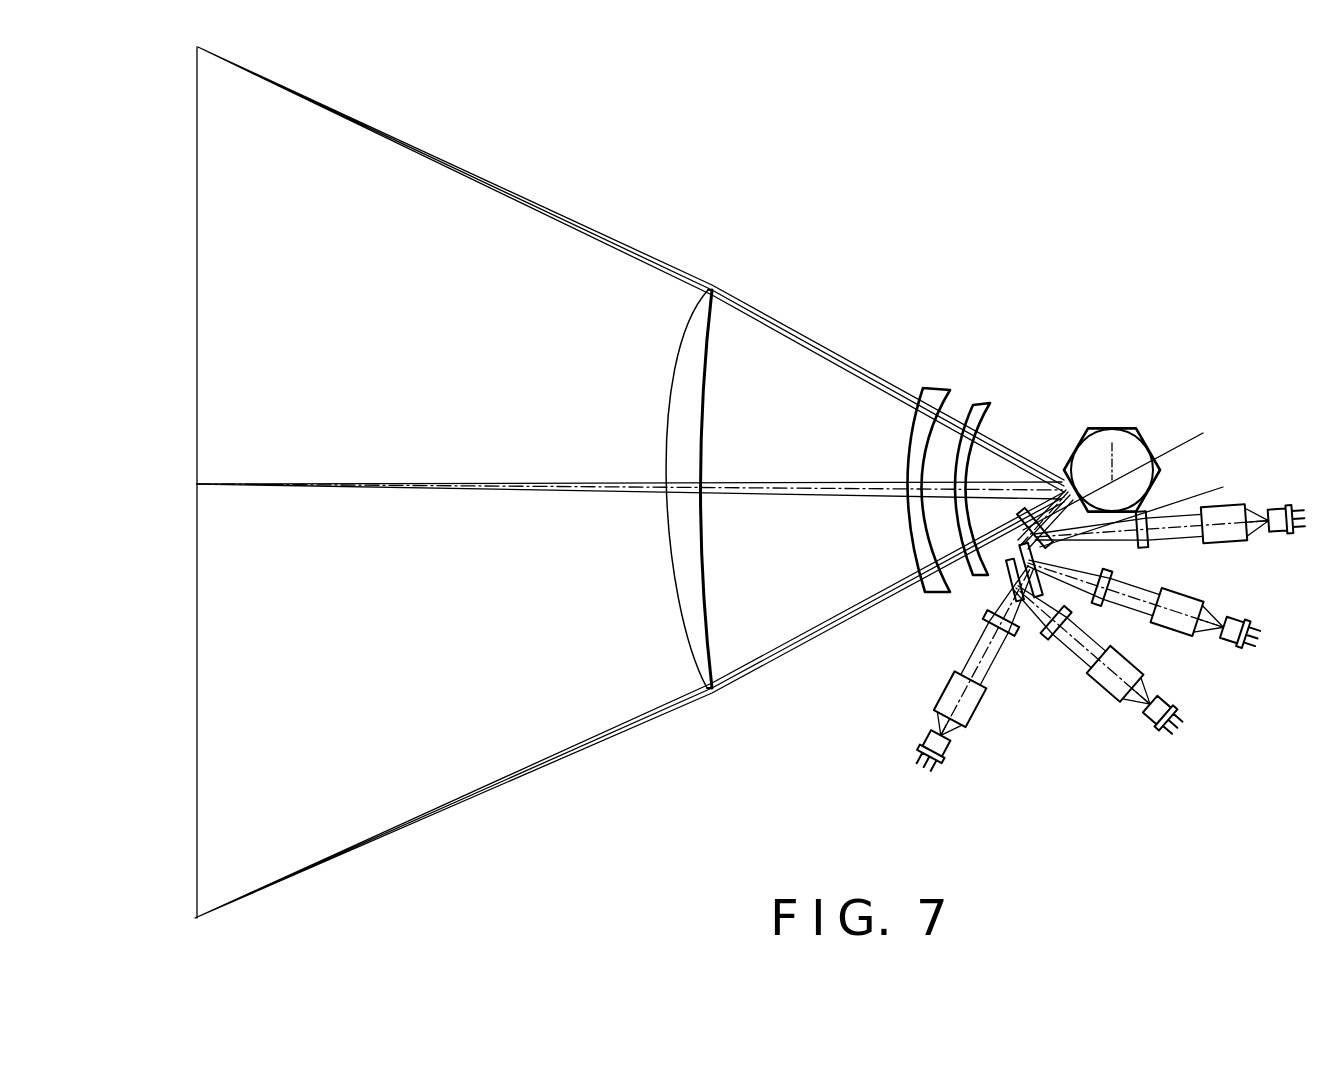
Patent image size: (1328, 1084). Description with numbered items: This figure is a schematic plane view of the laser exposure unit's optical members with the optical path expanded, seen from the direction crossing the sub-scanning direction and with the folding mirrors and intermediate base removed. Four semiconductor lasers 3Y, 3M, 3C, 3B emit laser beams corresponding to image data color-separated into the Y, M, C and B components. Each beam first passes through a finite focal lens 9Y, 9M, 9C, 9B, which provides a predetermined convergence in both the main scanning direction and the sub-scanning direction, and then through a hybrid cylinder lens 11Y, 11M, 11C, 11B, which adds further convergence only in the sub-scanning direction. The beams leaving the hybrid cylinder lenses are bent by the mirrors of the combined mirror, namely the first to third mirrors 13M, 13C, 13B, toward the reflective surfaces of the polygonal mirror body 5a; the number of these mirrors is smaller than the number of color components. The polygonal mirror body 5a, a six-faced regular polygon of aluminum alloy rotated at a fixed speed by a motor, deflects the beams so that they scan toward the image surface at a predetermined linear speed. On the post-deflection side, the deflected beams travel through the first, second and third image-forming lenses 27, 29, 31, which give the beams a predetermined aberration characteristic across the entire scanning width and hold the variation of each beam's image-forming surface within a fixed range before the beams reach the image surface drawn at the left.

The third image-forming lens 31 is at (690, 372).
The second image-forming lens 29 is at (943, 390).
The first image-forming lens 27 is at (984, 404).
The polygonal mirror body 5a is at (1104, 447).
The third mirror 13B is at (1030, 515).
The second mirror 13C is at (1022, 552).
The first mirror 13M is at (1020, 616).
The hybrid cylinder lens 11B is at (1148, 546).
The hybrid cylinder lens 11C is at (1100, 604).
The hybrid cylinder lens 11M is at (1054, 634).
The hybrid cylinder lens 11Y is at (985, 628).
The finite focal lens 9B is at (1228, 507).
The finite focal lens 9C is at (1178, 634).
The finite focal lens 9M is at (1104, 688).
The finite focal lens 9Y is at (984, 708).
The fourth semiconductor laser 3B is at (1276, 537).
The third semiconductor laser 3C is at (1238, 640).
The second semiconductor laser 3M is at (1150, 722).
The first semiconductor laser 3Y is at (924, 740).